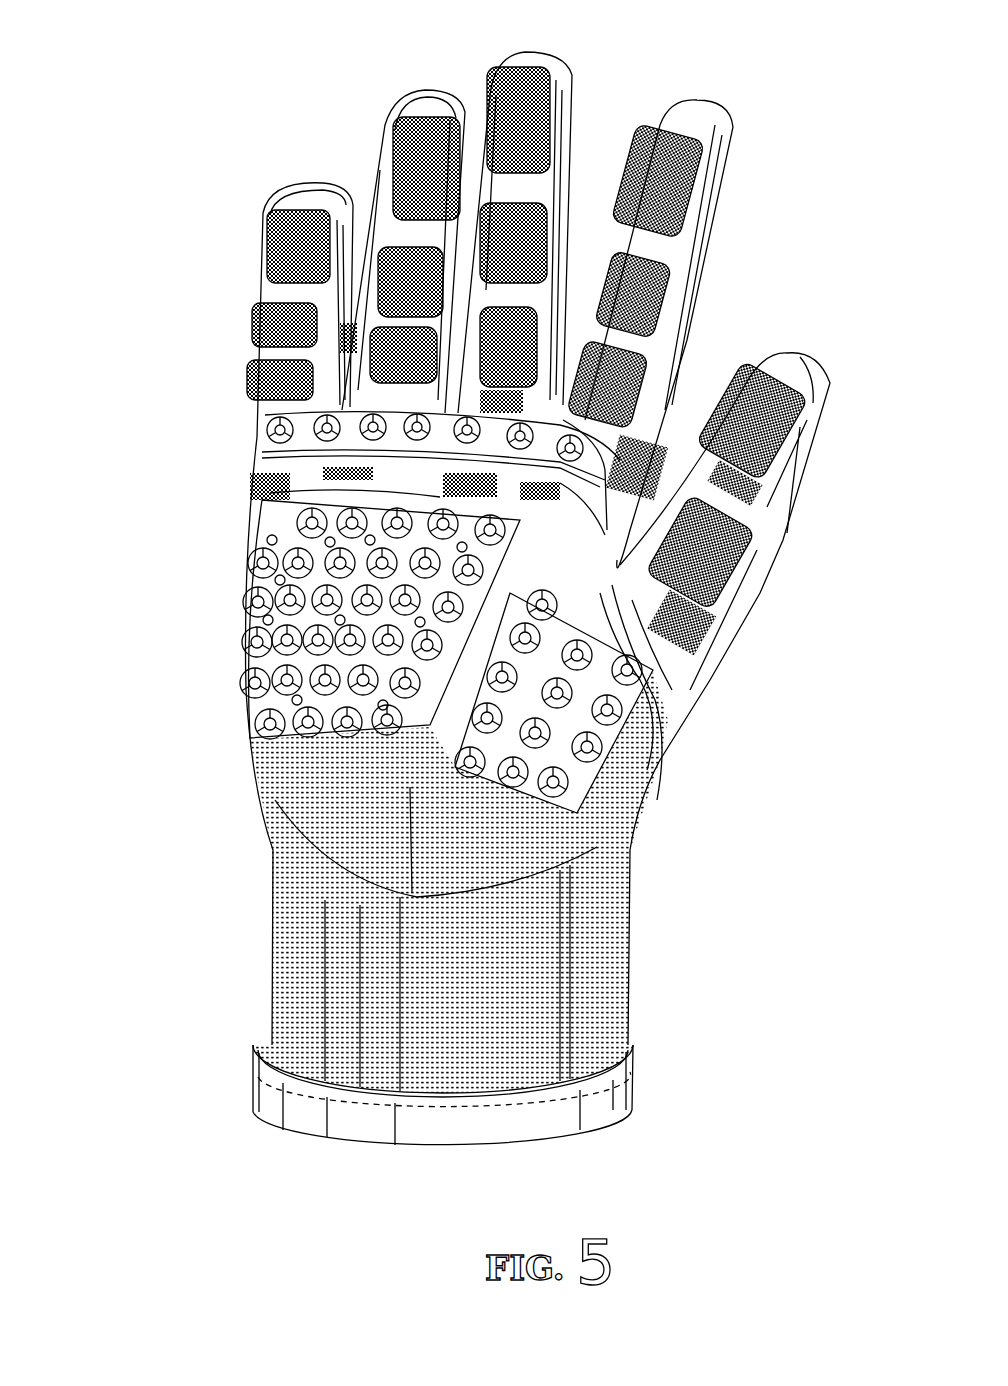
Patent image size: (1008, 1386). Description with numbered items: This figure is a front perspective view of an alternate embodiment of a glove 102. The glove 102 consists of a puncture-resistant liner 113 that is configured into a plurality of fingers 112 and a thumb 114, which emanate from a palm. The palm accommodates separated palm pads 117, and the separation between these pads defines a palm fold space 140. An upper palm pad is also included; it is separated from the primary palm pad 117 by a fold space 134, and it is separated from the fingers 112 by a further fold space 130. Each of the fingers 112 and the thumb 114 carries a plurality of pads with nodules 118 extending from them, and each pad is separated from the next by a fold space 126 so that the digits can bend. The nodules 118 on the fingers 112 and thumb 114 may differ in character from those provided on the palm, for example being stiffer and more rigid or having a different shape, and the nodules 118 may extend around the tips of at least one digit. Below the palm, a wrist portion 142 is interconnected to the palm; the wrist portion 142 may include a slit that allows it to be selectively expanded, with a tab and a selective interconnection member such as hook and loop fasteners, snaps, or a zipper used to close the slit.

The glove 102 is at (285, 112).
The fingers 112 is at (263, 303).
The nodules 118 is at (650, 125).
The fold space 126 is at (657, 250).
The fold space 130 is at (250, 417).
The fold space 134 is at (232, 488).
The palm pad 117 is at (257, 560).
The palm fold space 140 is at (262, 717).
The thumb 114 is at (752, 575).
The puncture-resistant liner 113 is at (593, 917).
The wrist portion 142 is at (277, 1013).